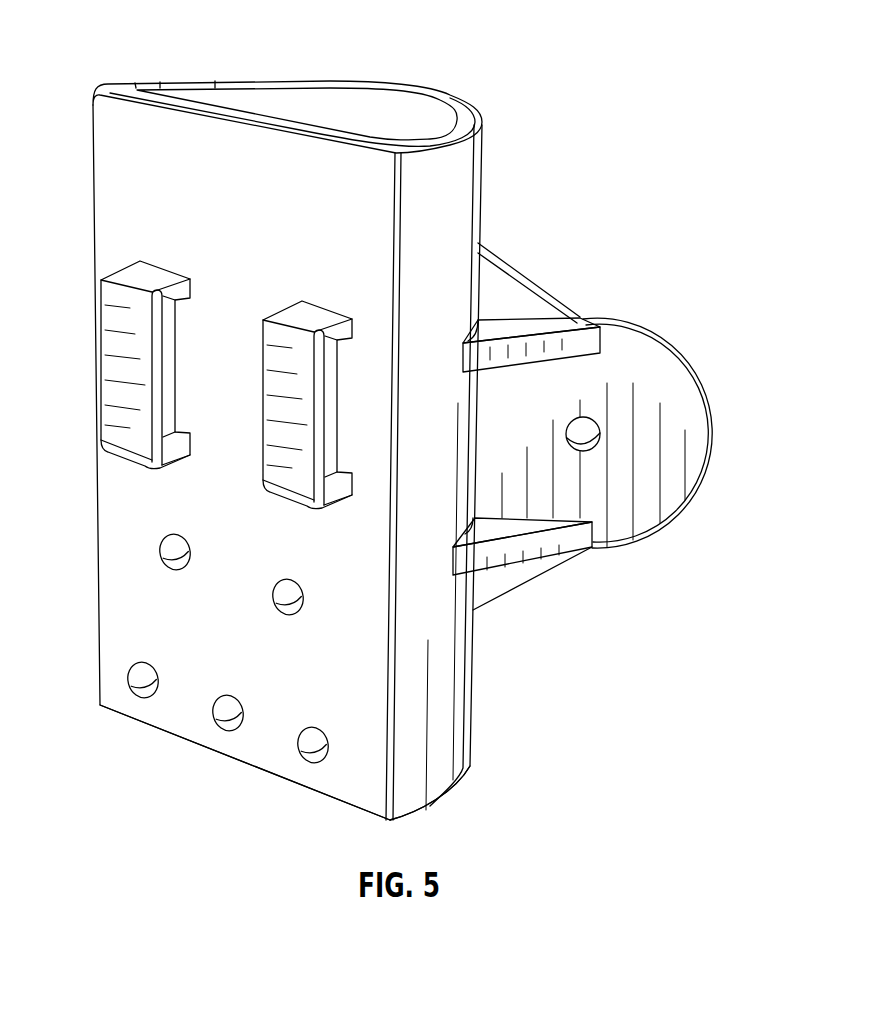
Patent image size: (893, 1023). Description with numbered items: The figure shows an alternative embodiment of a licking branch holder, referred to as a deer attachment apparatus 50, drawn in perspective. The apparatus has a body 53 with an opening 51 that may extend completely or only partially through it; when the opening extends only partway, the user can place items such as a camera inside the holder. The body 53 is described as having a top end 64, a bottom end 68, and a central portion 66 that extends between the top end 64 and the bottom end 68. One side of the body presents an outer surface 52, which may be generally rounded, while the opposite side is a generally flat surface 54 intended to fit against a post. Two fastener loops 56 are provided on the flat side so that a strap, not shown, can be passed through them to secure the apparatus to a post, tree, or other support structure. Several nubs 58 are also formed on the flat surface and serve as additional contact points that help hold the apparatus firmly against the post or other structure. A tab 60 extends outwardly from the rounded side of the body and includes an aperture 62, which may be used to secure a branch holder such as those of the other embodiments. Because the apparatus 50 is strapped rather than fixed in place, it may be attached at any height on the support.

The deer attachment apparatus 50 is at (505, 55).
The opening 51 is at (345, 108).
The outer surface 52 is at (447, 232).
The body 53 is at (209, 58).
The generally flat surface 54 is at (140, 147).
The fastener loops 56 is at (275, 432).
The nubs 58 is at (163, 557).
The tab 60 is at (652, 352).
The aperture 62 is at (581, 428).
The top end 64 is at (120, 90).
The central portion 66 is at (437, 775).
The bottom end 68 is at (167, 503).